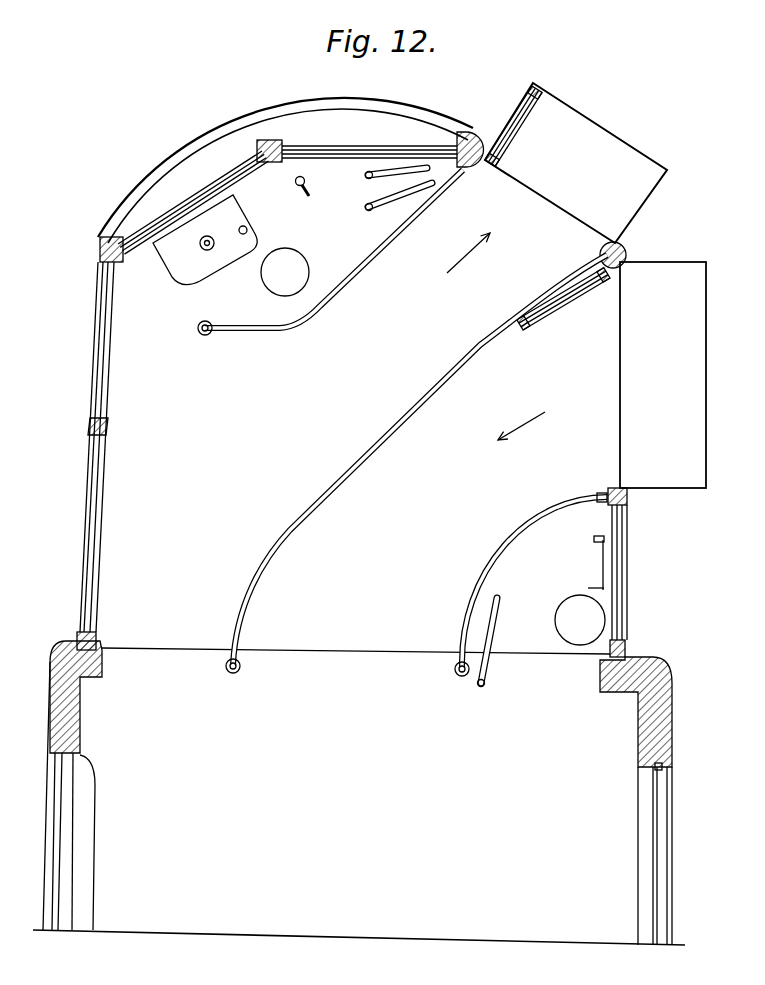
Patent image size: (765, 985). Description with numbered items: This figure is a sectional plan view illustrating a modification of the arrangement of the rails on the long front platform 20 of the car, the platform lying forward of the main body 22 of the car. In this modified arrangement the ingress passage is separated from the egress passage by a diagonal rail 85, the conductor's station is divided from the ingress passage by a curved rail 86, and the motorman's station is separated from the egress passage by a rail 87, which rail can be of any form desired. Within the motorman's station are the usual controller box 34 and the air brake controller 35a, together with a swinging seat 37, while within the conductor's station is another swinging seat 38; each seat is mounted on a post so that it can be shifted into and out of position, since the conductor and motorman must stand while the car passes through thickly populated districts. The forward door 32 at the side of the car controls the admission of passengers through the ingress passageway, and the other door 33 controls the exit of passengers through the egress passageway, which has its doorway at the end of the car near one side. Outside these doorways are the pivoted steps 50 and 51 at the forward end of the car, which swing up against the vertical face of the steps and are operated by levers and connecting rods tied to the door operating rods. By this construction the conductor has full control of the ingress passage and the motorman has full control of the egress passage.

The front platform 20 is at (352, 377).
The main body 22 is at (359, 793).
The forward door 32 is at (522, 122).
The door 33 is at (565, 300).
The controller box 34 is at (180, 260).
The air brake controller 35a is at (283, 196).
The swinging seat 37 is at (286, 255).
The swinging seat 38 is at (568, 608).
The step 50 is at (592, 140).
The step 51 is at (690, 350).
The diagonal rail 85 is at (417, 413).
The curved rail 86 is at (503, 549).
The rail 87 is at (364, 273).